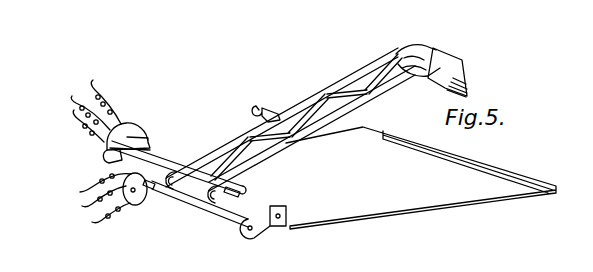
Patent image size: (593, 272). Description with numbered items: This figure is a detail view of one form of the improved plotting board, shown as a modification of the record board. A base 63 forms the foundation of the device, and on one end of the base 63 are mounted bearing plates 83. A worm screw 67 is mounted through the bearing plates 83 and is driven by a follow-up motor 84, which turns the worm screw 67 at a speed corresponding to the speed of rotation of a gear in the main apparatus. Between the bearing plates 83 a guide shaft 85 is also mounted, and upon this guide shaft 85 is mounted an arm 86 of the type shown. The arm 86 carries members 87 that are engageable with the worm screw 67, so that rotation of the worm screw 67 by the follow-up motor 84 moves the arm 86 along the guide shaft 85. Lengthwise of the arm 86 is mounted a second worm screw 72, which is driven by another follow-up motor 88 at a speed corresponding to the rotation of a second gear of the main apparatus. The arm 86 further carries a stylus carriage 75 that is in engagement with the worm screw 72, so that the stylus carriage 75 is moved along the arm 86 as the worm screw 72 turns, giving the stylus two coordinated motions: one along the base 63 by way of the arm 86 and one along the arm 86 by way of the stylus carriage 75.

The base 63 is at (421, 178).
The worm screw 67 is at (161, 150).
The worm screw 72 is at (150, 187).
The stylus carriage 75 is at (266, 107).
The bearing plates 83 is at (110, 153).
The follow-up motor 84 is at (127, 123).
The guide shaft 85 is at (227, 217).
The arm 86 is at (317, 92).
The members 87 is at (242, 190).
The follow-up motor 88 is at (140, 195).